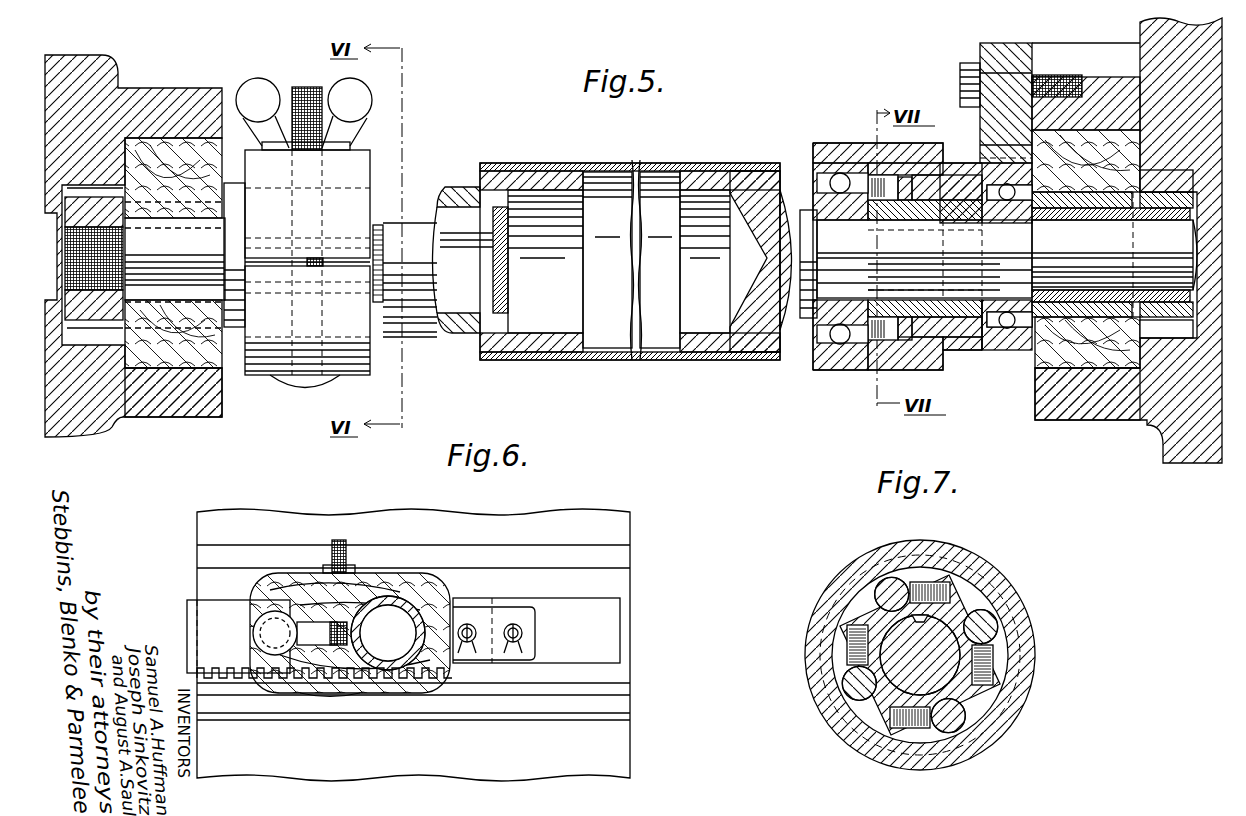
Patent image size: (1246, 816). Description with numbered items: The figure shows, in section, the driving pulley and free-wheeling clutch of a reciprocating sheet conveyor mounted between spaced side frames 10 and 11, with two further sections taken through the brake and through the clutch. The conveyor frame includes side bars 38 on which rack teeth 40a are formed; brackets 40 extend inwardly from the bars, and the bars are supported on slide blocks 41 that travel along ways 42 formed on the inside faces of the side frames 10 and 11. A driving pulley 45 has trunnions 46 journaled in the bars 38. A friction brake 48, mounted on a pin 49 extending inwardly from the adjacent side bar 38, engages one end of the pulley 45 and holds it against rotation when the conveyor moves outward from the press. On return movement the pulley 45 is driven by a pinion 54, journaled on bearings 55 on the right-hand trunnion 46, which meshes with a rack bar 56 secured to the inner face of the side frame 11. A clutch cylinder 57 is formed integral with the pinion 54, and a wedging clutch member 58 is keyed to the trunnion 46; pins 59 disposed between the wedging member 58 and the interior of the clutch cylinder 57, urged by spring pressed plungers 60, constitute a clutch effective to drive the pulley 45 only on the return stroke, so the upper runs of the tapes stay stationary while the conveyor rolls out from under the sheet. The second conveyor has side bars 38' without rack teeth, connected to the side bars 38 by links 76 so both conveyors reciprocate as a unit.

In FIG. 5, the side frame 10 is at (114, 432).
In FIG. 6, the side frame 10 is at (443, 516).
In FIG. 5, the side frame 11 is at (1162, 432).
In FIG. 5, the side bar 38 is at (618, 120).
In FIG. 6, the side bar 38 is at (238, 625).
In FIG. 6, the side bar 38' is at (536, 619).
In FIG. 5, the bracket 40 is at (1150, 333).
In FIG. 5, the rack teeth 40a is at (83, 335).
In FIG. 6, the rack teeth 40a is at (235, 678).
In FIG. 5, the slide block 41 is at (172, 372).
In FIG. 6, the slide block 41 is at (468, 683).
In FIG. 5, the way 42 is at (213, 362).
In FIG. 6, the way 42 is at (490, 576).
In FIG. 5, the driving pulley 45 is at (640, 163).
In FIG. 6, the driving pulley 45 is at (397, 673).
In FIG. 5, the trunnion 46 is at (170, 222).
In FIG. 7, the trunnion 46 is at (832, 723).
In FIG. 5, the friction brake 48 is at (345, 163).
In FIG. 6, the friction brake 48 is at (380, 594).
In FIG. 5, the pin 49 is at (383, 246).
In FIG. 6, the pin 49 is at (275, 612).
In FIG. 5, the pinion 54 is at (982, 163).
In FIG. 5, the bearing 55 is at (822, 352).
In FIG. 5, the rack bar 56 is at (982, 124).
In FIG. 5, the clutch cylinder 57 is at (883, 172).
In FIG. 7, the clutch cylinder 57 is at (812, 659).
In FIG. 5, the wedging clutch member 58 is at (931, 318).
In FIG. 7, the wedging clutch member 58 is at (985, 601).
In FIG. 5, the pin 59 is at (888, 187).
In FIG. 7, the pin 59 is at (858, 587).
In FIG. 7, the spring pressed plunger 60 is at (916, 568).
In FIG. 6, the link 76 is at (517, 662).